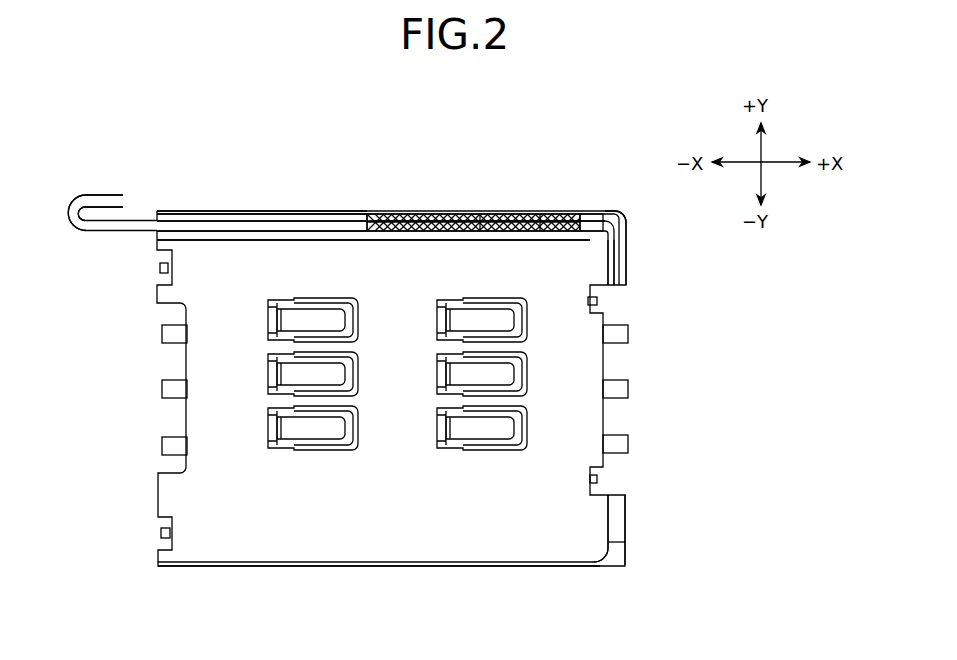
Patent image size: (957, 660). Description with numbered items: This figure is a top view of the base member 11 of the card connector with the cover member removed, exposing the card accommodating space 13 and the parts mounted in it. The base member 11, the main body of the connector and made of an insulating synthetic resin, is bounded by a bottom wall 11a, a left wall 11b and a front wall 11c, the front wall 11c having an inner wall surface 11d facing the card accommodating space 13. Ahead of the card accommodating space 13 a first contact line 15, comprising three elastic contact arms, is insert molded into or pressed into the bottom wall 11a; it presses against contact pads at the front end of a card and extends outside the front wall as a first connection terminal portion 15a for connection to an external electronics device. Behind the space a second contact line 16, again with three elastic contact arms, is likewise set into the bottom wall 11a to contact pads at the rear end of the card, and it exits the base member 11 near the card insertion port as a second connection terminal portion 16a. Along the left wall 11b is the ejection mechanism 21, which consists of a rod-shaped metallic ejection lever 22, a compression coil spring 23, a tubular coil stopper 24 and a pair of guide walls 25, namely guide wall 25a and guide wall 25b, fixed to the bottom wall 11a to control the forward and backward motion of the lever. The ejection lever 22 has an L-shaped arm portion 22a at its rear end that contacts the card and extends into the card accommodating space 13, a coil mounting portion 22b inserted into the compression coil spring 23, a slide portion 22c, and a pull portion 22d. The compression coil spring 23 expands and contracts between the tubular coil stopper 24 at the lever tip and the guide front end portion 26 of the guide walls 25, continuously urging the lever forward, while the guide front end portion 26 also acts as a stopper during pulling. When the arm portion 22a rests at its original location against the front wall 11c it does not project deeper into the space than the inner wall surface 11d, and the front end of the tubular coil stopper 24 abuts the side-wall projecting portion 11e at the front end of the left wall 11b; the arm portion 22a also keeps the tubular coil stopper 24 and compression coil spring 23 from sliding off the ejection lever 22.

The base member 11 is at (513, 568).
The bottom wall 11a is at (546, 569).
The left wall 11b is at (388, 212).
The front wall 11c is at (625, 227).
The inner wall surface 11d is at (613, 545).
The side-wall projecting portion 11e is at (608, 212).
The card accommodating space 13 is at (382, 569).
The first contact line 15 is at (518, 324).
The first connection terminal portion 15a is at (625, 335).
The second contact line 16 is at (318, 312).
The second connection terminal portion 16a is at (166, 335).
The ejection mechanism 21 is at (420, 204).
The ejection lever 22 is at (133, 235).
The arm portion 22a is at (615, 253).
The coil mounting portion 22b is at (487, 220).
The slide portion 22c is at (182, 215).
The pull portion 22d is at (82, 235).
The compression coil spring 23 is at (510, 220).
The tubular coil stopper 24 is at (593, 220).
The guide walls 25 is at (285, 122).
The guide wall 25a is at (218, 217).
The guide wall 25b is at (240, 217).
The guide front end portion 26 is at (362, 225).